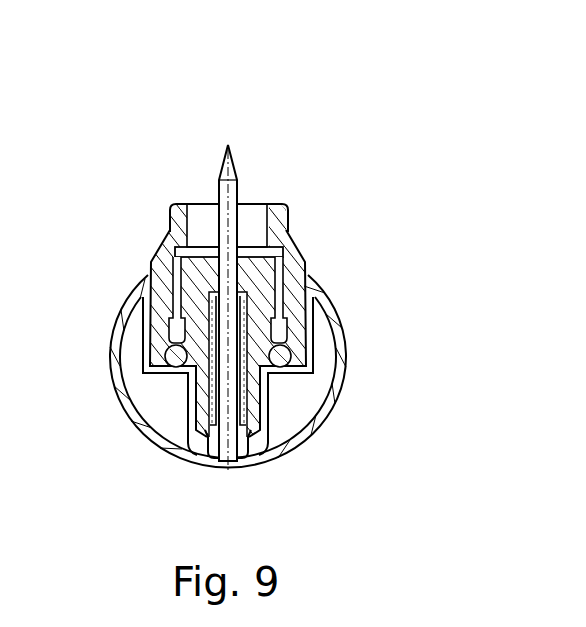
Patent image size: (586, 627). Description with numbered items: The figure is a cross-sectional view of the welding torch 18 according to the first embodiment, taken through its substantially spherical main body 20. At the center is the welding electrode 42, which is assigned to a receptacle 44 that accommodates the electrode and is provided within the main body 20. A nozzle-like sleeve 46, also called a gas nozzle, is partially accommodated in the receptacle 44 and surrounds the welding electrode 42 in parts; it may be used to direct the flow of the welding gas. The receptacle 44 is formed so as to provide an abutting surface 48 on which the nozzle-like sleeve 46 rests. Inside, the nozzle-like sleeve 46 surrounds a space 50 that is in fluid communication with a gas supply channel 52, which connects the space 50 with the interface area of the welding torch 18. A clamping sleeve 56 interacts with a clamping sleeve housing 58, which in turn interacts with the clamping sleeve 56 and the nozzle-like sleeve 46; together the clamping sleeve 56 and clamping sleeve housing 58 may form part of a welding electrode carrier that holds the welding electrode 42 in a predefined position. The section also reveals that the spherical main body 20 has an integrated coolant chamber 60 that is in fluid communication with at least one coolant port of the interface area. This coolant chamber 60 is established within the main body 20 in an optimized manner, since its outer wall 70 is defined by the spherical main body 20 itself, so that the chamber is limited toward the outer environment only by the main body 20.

The welding torch 18 is at (143, 188).
The substantially spherical main body 20 is at (124, 306).
The welding electrode 42 is at (232, 173).
The receptacle 44 is at (292, 288).
The nozzle-like sleeve 46 is at (285, 217).
The abutting surface 48 is at (159, 362).
The space 50 is at (205, 229).
The gas supply channel 52 is at (248, 460).
The clamping sleeve 56 is at (207, 449).
The clamping sleeve housing 58 is at (174, 262).
The integrated coolant chamber 60 is at (141, 383).
The outer wall 70 is at (159, 405).